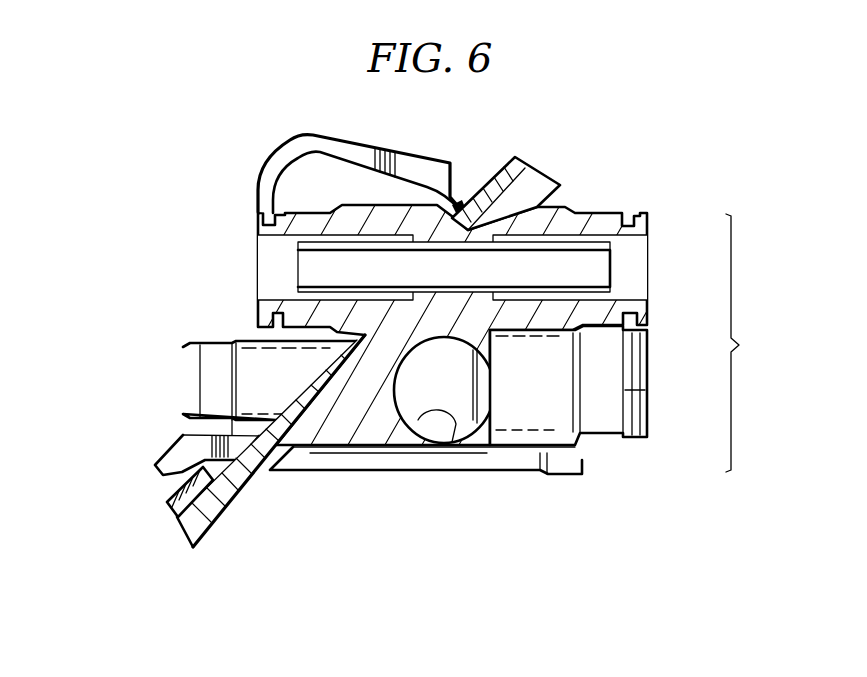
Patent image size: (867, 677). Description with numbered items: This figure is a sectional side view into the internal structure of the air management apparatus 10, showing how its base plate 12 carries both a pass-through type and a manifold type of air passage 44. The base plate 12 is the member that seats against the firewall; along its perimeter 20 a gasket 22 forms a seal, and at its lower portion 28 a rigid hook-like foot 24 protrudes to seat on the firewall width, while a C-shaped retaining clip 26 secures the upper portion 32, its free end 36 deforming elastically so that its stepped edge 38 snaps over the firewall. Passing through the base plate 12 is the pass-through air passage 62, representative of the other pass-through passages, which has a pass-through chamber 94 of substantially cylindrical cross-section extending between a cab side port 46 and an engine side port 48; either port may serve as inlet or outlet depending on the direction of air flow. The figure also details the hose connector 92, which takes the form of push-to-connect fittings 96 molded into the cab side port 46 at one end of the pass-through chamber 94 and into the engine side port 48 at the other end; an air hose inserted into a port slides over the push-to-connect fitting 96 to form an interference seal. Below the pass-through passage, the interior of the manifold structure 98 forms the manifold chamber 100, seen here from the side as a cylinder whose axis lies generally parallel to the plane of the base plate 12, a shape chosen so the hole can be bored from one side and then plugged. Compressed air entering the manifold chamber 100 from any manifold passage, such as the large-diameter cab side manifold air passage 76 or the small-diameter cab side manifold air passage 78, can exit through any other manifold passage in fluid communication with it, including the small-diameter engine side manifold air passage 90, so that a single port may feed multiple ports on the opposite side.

The air management apparatus 10 is at (153, 271).
The base plate 12 is at (545, 176).
The perimeter 20 is at (170, 520).
The gasket 22 is at (174, 487).
The foot 24 is at (163, 452).
The retaining clip 26 is at (310, 135).
The lower portion 28 is at (214, 527).
The upper portion 32 is at (558, 196).
The free end 36 is at (440, 160).
The stepped edge 38 is at (462, 195).
The air passage 44 is at (750, 343).
The cab side port 46 is at (648, 296).
The engine side port 48 is at (258, 257).
The pass-through air passage 62 is at (262, 195).
The large-diameter cab side manifold air passage 76 is at (553, 414).
The small-diameter cab side manifold air passage 78 is at (497, 463).
The small-diameter engine side manifold air passage 90 is at (250, 378).
The hose connector 92 is at (652, 386).
The pass-through chamber 94 is at (384, 268).
The push-to-connect fitting 96 is at (312, 272).
The manifold structure 98 is at (350, 434).
The manifold chamber 100 is at (447, 423).